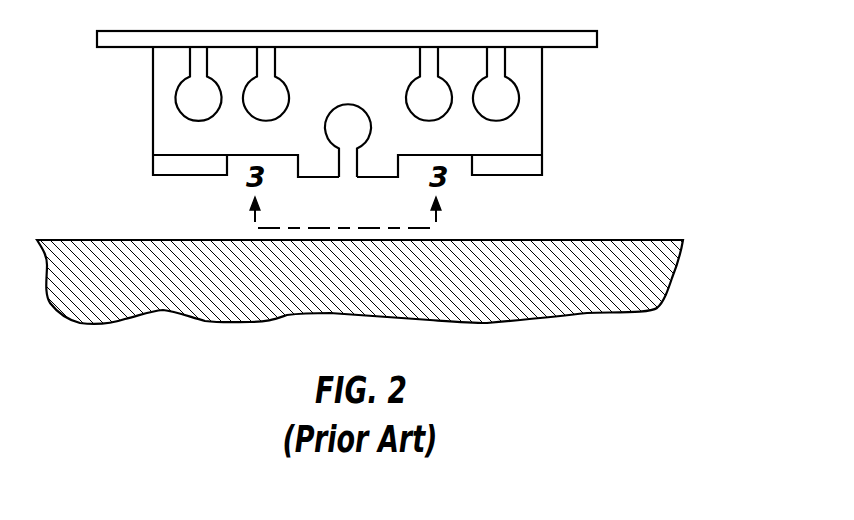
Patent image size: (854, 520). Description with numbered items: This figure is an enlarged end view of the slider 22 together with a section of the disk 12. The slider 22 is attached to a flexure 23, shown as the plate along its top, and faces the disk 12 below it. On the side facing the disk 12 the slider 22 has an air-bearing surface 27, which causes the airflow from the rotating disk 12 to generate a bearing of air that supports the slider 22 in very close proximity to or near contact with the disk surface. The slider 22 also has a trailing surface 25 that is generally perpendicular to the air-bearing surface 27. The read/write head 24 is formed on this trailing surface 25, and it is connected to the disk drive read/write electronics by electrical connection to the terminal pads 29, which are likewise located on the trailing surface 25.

The disk 12 is at (660, 280).
The slider 22 is at (544, 137).
The flexure 23 is at (580, 36).
The read/write head 24 is at (345, 104).
The trailing surface 25 is at (170, 135).
The air-bearing surface 27 is at (190, 178).
The terminal pads 29 is at (248, 98).